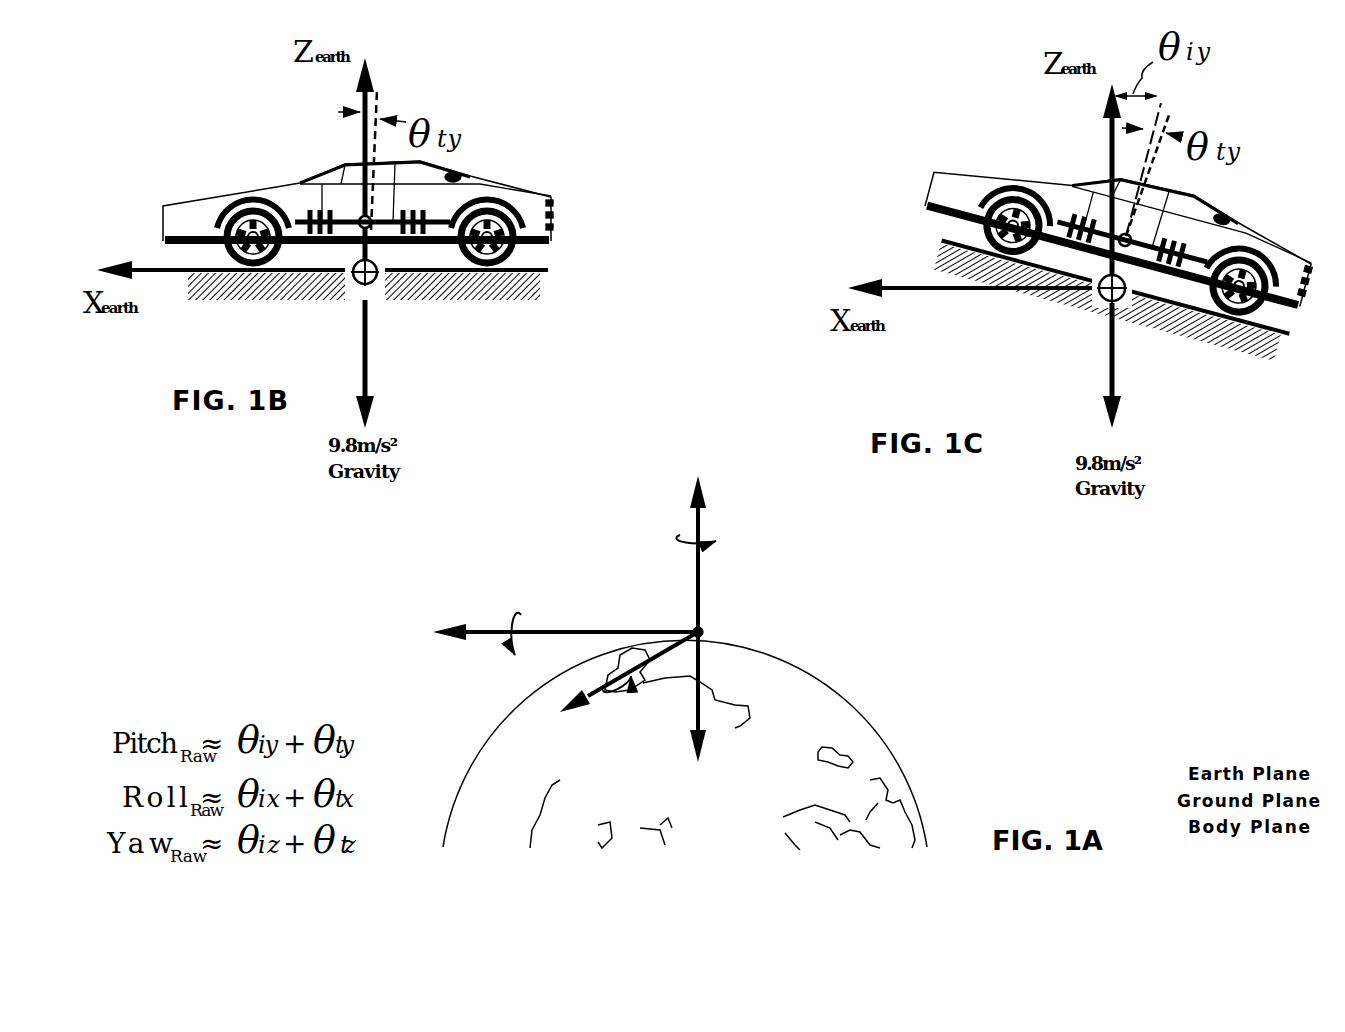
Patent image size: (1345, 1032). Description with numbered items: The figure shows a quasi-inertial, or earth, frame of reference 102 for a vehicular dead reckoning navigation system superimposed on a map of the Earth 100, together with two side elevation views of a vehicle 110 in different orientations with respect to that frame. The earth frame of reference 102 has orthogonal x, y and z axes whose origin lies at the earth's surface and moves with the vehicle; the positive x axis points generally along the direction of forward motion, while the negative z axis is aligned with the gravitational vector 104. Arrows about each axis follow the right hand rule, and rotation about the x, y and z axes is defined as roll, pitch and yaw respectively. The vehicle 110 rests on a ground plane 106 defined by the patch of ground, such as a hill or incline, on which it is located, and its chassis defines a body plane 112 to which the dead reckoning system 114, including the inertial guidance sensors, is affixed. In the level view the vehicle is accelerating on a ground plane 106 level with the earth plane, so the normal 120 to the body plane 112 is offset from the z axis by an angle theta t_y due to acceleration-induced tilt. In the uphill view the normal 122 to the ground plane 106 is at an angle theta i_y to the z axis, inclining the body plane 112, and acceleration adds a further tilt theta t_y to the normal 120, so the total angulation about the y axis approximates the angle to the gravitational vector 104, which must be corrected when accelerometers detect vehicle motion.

In FIG. 1A, the map of the Earth 100 is at (463, 790).
In FIG. 1A, the earth frame of reference 102 is at (602, 572).
In FIG. 1A, the gravitational vector 104 is at (703, 694).
In FIG. 1B, the ground plane 106 is at (500, 292).
In FIG. 1C, the ground plane 106 is at (1152, 348).
In FIG. 1B, the vehicle 110 is at (225, 194).
In FIG. 1C, the vehicle 110 is at (975, 172).
In FIG. 1B, the body plane 112 is at (450, 218).
In FIG. 1C, the body plane 112 is at (1198, 250).
In FIG. 1B, the dead reckoning system 114 is at (371, 218).
In FIG. 1C, the dead reckoning system 114 is at (1131, 236).
In FIG. 1B, the normal to the body plane 120 is at (379, 92).
In FIG. 1C, the normal to the body plane 120 is at (1170, 118).
In FIG. 1C, the normal to the ground plane 122 is at (1166, 92).